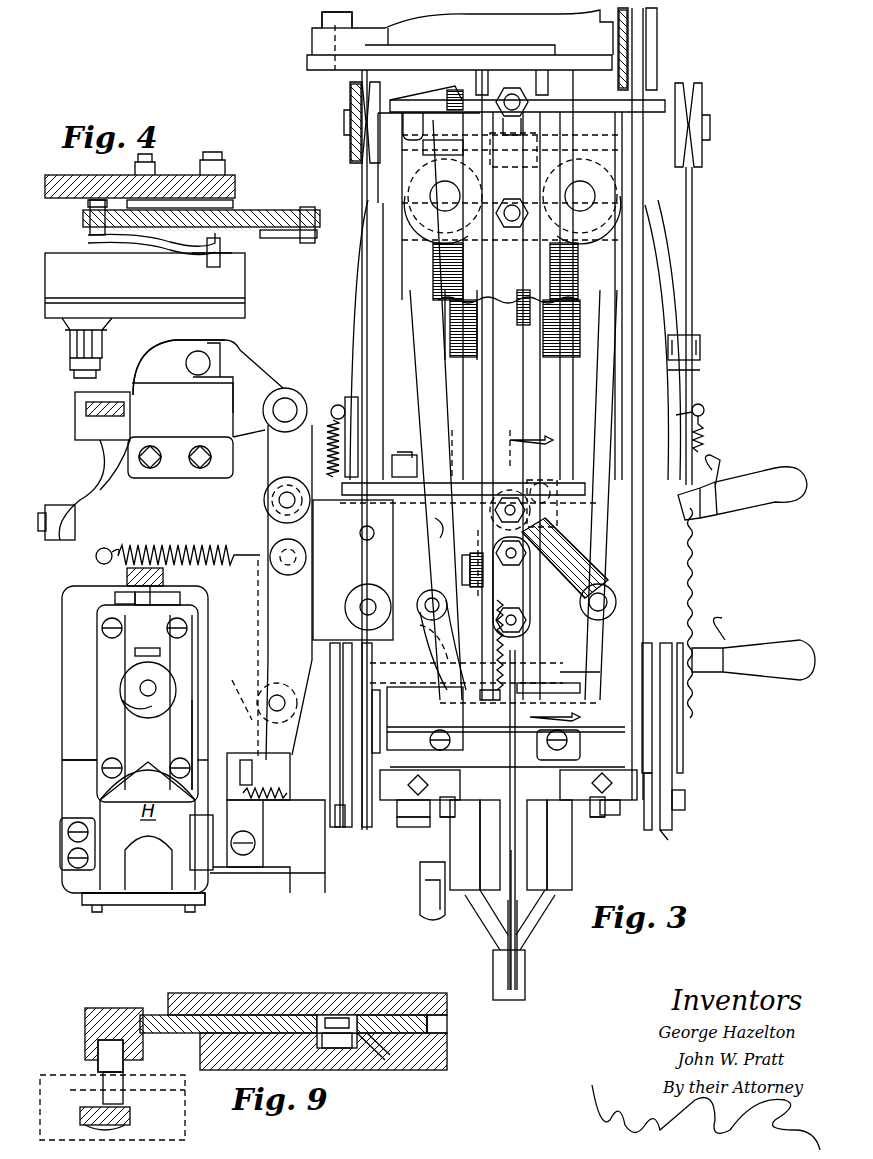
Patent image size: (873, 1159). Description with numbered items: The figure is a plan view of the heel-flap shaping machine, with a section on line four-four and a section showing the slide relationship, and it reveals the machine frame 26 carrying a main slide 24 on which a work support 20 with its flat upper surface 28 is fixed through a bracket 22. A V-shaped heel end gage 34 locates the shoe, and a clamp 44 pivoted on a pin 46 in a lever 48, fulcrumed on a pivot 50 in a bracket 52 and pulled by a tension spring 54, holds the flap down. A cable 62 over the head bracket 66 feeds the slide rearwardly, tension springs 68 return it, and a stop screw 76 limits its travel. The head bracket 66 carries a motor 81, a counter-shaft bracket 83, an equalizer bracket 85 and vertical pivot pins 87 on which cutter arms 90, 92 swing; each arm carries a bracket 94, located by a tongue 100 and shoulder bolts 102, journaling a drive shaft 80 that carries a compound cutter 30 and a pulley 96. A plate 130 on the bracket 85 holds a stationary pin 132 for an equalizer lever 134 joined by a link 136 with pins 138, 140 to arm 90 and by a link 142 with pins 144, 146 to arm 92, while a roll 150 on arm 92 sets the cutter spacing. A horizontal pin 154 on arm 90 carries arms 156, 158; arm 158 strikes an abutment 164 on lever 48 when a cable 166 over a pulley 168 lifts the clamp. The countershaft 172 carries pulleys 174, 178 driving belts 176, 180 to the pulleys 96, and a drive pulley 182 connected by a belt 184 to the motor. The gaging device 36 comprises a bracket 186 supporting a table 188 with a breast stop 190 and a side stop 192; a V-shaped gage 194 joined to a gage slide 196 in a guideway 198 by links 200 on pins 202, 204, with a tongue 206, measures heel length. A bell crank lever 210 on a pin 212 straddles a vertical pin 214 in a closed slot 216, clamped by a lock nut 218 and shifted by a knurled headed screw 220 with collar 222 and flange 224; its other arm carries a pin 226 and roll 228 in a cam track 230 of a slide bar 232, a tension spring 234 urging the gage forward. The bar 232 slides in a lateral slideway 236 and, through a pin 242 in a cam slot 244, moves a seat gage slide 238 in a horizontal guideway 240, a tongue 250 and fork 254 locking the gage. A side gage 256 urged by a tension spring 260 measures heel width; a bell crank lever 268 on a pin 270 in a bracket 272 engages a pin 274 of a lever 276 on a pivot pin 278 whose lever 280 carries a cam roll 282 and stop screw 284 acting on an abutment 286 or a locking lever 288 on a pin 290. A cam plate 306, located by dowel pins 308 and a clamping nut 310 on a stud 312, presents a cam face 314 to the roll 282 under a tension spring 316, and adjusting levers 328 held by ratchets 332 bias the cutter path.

In FIG. 3, the work support 20 is at (520, 930).
In FIG. 3, the bracket 22 is at (572, 876).
In FIG. 3, the main slide 24 is at (452, 465).
In FIG. 9, the main slide 24 is at (260, 993).
In FIG. 3, the machine frame 26 is at (675, 248).
In FIG. 3, the upper surface 28 is at (525, 987).
In FIG. 3, the compound shaping cutters 30 is at (478, 816).
In FIG. 3, the heel end gage 34 is at (480, 905).
In FIG. 3, the gaging device 36 is at (310, 906).
In FIG. 3, the clamp 44 is at (505, 963).
In FIG. 3, the pin 46 is at (505, 937).
In FIG. 3, the lever 48 is at (530, 910).
In FIG. 3, the pivot 50 is at (482, 693).
In FIG. 3, the bracket 52 is at (582, 746).
In FIG. 3, the tension spring 54 is at (505, 668).
In FIG. 3, the cable 62 is at (693, 200).
In FIG. 3, the head bracket 66 is at (452, 100).
In FIG. 3, the tension springs 68 is at (338, 405).
In FIG. 3, the stop screw 76 is at (680, 325).
In FIG. 3, the drive shaft 80 is at (686, 800).
In FIG. 3, the motor 81 is at (338, 22).
In FIG. 3, the counter-shaft bracket 83 is at (503, 302).
In FIG. 4, the equalizer bracket 85 is at (72, 175).
In FIG. 3, the equalizer bracket 85 is at (505, 353).
In FIG. 3, the vertical pivot pins 87 is at (597, 195).
In FIG. 3, the cutter arm 90 is at (433, 366).
In FIG. 4, the cutter arm 92 is at (245, 290).
In FIG. 3, the cutter arm 92 is at (610, 405).
In FIG. 3, the bracket 94 is at (440, 817).
In FIG. 3, the pulley 96 is at (372, 830).
In FIG. 3, the tongue 100 is at (508, 793).
In FIG. 3, the shoulder bolts 102 is at (400, 818).
In FIG. 4, the plate 130 is at (238, 200).
In FIG. 3, the plate 130 is at (470, 590).
In FIG. 4, the stationary pin 132 is at (232, 243).
In FIG. 3, the stationary pin 132 is at (511, 587).
In FIG. 4, the equalizer lever 134 is at (296, 210).
In FIG. 3, the equalizer lever 134 is at (556, 586).
In FIG. 4, the link 136 is at (280, 240).
In FIG. 3, the link 136 is at (440, 662).
In FIG. 3, the pin 138 is at (425, 596).
In FIG. 4, the pin 140 is at (312, 245).
In FIG. 3, the pin 140 is at (580, 688).
In FIG. 4, the link 142 is at (88, 240).
In FIG. 3, the link 142 is at (595, 578).
In FIG. 3, the pin 144 is at (598, 621).
In FIG. 4, the pin 146 is at (90, 205).
In FIG. 3, the pin 146 is at (496, 510).
In FIG. 4, the roll 150 is at (104, 352).
In FIG. 3, the roll 150 is at (560, 514).
In FIG. 3, the horizontal pin 154 is at (425, 718).
In FIG. 3, the upwardly extending arm 156 is at (440, 640).
In FIG. 3, the rearwardly extending arm 158 is at (462, 562).
In FIG. 3, the abutment 164 is at (475, 548).
In FIG. 3, the cable 166 is at (360, 306).
In FIG. 3, the pulley 168 is at (350, 101).
In FIG. 3, the countershaft 172 is at (685, 720).
In FIG. 3, the pulley 174 is at (345, 680).
In FIG. 3, the belt 176 is at (333, 643).
In FIG. 3, the pulley 178 is at (683, 752).
In FIG. 3, the belt 180 is at (660, 832).
In FIG. 3, the drive pulley 182 is at (648, 655).
In FIG. 3, the belt 184 is at (640, 48).
In FIG. 3, the bracket 186 is at (80, 580).
In FIG. 9, the bracket 186 is at (70, 1075).
In FIG. 3, the table 188 is at (198, 613).
In FIG. 3, the breast stop 190 is at (142, 906).
In FIG. 3, the side stop 192 is at (88, 870).
In FIG. 3, the V-shaped gage 194 is at (97, 790).
In FIG. 3, the gage slide 196 is at (120, 683).
In FIG. 3, the guideway 198 is at (115, 598).
In FIG. 3, the links 200 is at (102, 628).
In FIG. 3, the vertical pins 202 is at (172, 628).
In FIG. 3, the vertical pins 204 is at (178, 762).
In FIG. 3, the tongue 206 is at (195, 736).
In FIG. 3, the bell crank lever 210 is at (235, 690).
In FIG. 9, the bell crank lever 210 is at (90, 1130).
In FIG. 3, the pin 212 is at (257, 703).
In FIG. 3, the vertical pin 214 is at (140, 690).
In FIG. 3, the closed slot 216 is at (130, 660).
In FIG. 3, the lock nut 218 is at (120, 706).
In FIG. 3, the knurled headed screw 220 is at (165, 580).
In FIG. 3, the collar 222 is at (118, 594).
In FIG. 3, the flange 224 is at (180, 598).
In FIG. 3, the pin 226 is at (270, 553).
In FIG. 9, the pin 226 is at (125, 1090).
In FIG. 3, the roll 228 is at (360, 533).
In FIG. 9, the roll 228 is at (125, 1070).
In FIG. 9, the cam track 230 is at (106, 1040).
In FIG. 9, the slide bar 232 is at (140, 1015).
In FIG. 3, the tension spring 234 is at (180, 548).
In FIG. 9, the lateral slideway 236 is at (447, 1027).
In FIG. 9, the seat gage slide 238 is at (385, 1052).
In FIG. 9, the horizontal guideway 240 is at (293, 1050).
In FIG. 9, the pin 242 is at (340, 1015).
In FIG. 9, the cam slot 244 is at (350, 1050).
In FIG. 3, the tongue 250 is at (425, 862).
In FIG. 3, the fork 254 is at (418, 886).
In FIG. 3, the side gage 256 is at (172, 892).
In FIG. 3, the tension spring 260 is at (258, 848).
In FIG. 3, the bell crank lever 268 is at (75, 478).
In FIG. 3, the pin 270 is at (78, 406).
In FIG. 3, the bracket 272 is at (175, 478).
In FIG. 3, the pin 274 is at (88, 413).
In FIG. 3, the lever 276 is at (142, 396).
In FIG. 3, the pivot pin 278 is at (288, 432).
In FIG. 3, the lever 280 is at (266, 482).
In FIG. 3, the cam roll 282 is at (268, 503).
In FIG. 3, the stop screw 284 is at (245, 760).
In FIG. 3, the abutment 286 is at (315, 892).
In FIG. 3, the locking lever 288 is at (270, 868).
In FIG. 3, the pin 290 is at (243, 832).
In FIG. 3, the cam plate 306 is at (437, 522).
In FIG. 3, the dowel pins 308 is at (353, 570).
In FIG. 3, the clamping nut 310 is at (358, 592).
In FIG. 3, the stud 312 is at (360, 606).
In FIG. 3, the cam face 314 is at (298, 622).
In FIG. 3, the tension spring 316 is at (410, 455).
In FIG. 3, the adjusting lever 328 is at (760, 502).
In FIG. 3, the ratchet 332 is at (690, 603).